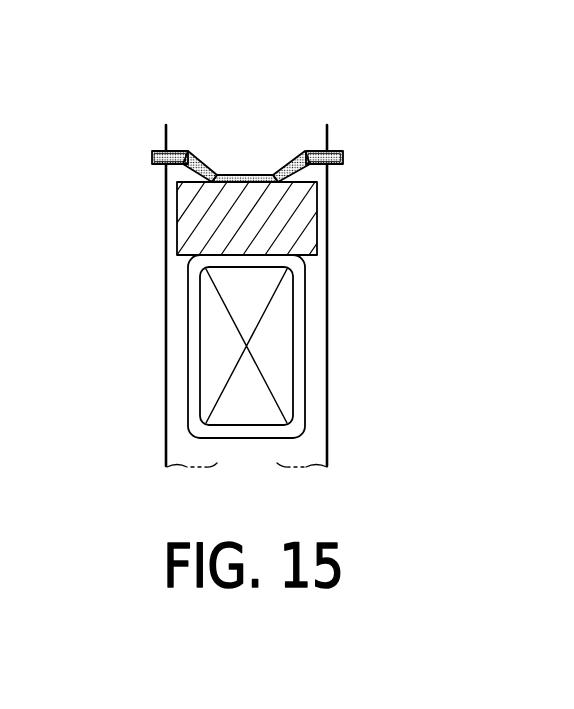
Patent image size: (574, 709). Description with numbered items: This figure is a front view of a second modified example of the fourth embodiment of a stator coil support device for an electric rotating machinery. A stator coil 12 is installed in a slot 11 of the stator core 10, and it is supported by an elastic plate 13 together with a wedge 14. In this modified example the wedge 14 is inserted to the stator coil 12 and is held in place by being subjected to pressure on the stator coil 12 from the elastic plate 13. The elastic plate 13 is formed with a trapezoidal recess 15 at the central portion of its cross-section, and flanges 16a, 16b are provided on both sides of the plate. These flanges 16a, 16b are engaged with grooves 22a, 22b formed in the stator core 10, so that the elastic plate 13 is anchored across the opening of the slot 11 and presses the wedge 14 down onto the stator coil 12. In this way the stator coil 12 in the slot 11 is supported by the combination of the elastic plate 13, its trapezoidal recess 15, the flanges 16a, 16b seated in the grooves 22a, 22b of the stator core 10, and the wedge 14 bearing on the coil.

The stator core 10 is at (157, 313).
The slot 11 is at (165, 380).
The stator coil 12 is at (212, 388).
The elastic plate 13 is at (325, 64).
The wedge 14 is at (300, 218).
The trapezoidal recess 15 is at (247, 177).
The flange 16a is at (181, 152).
The flange 16b is at (314, 163).
The groove 22a is at (152, 166).
The groove 22b is at (345, 157).